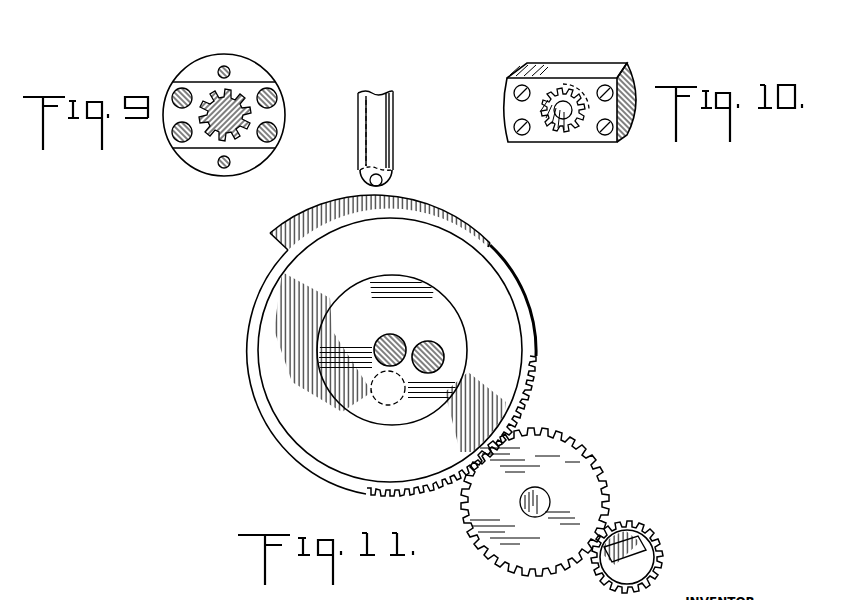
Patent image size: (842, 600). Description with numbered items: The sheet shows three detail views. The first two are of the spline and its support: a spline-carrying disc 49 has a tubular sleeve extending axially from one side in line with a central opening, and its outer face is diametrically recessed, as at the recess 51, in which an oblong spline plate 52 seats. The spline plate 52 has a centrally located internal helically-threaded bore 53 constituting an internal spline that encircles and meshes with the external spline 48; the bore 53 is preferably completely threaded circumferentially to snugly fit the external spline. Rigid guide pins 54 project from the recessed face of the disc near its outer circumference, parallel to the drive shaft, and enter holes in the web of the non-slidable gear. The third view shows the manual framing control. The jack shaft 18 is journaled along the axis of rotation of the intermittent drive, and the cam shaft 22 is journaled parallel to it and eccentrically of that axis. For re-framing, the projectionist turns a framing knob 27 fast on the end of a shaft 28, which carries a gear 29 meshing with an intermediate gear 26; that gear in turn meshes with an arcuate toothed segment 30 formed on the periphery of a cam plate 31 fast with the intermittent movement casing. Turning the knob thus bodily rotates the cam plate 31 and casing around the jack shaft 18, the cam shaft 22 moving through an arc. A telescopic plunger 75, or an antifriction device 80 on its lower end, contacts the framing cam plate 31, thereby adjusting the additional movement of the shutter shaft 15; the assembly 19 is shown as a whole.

In FIG. 9, the shutter shaft 15 is at (238, 103).
In FIG. 11, the jack shaft 18 is at (390, 334).
In FIG. 11, the cam disc assembly 19 is at (432, 345).
In FIG. 11, the cam shaft 22 is at (430, 341).
In FIG. 11, the intermediate gear 26 is at (603, 473).
In FIG. 11, the framing knob 27 is at (650, 546).
In FIG. 11, the shaft 28 is at (650, 567).
In FIG. 11, the gear 29 is at (630, 524).
In FIG. 11, the arcuate toothed segment 30 is at (532, 394).
In FIG. 11, the cam plate 31 is at (450, 213).
In FIG. 9, the external spline 48 is at (248, 116).
In FIG. 9, the spline-carrying disc 49 is at (206, 58).
In FIG. 9, the recess 51 is at (188, 78).
In FIG. 9, the spline plate 52 is at (243, 102).
In FIG. 10, the spline plate 52 is at (596, 72).
In FIG. 9, the helically-threaded bore 53 is at (215, 137).
In FIG. 10, the helically-threaded bore 53 is at (558, 130).
In FIG. 9, the guide pins 54 is at (228, 68).
In FIG. 11, the plunger 75 is at (384, 131).
In FIG. 11, the antifriction device 80 is at (393, 190).